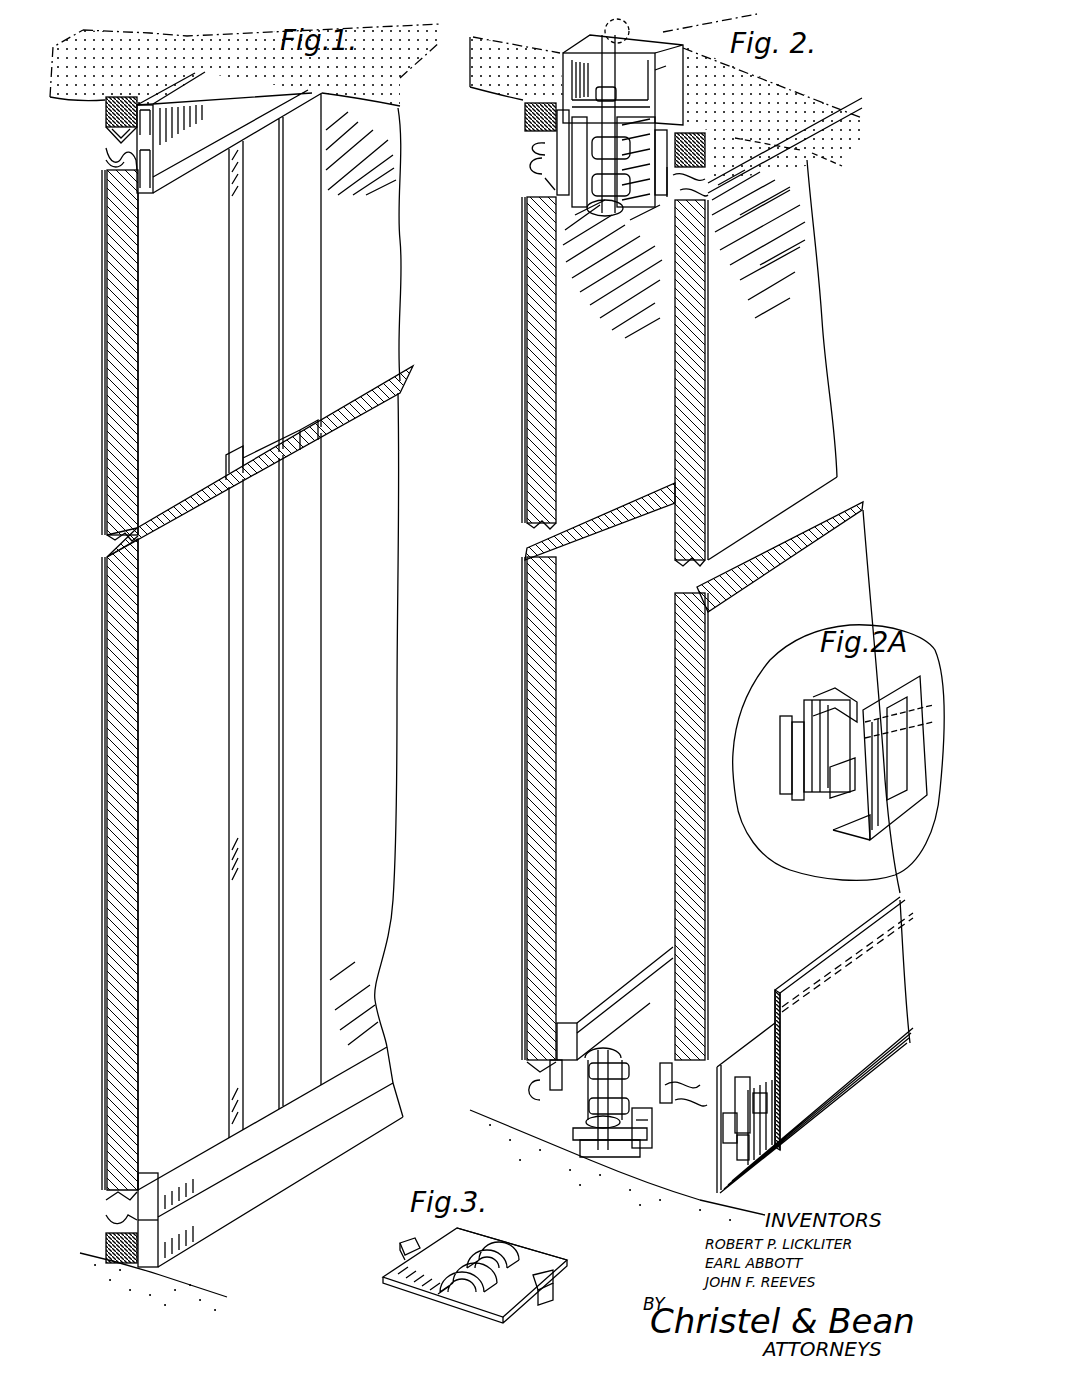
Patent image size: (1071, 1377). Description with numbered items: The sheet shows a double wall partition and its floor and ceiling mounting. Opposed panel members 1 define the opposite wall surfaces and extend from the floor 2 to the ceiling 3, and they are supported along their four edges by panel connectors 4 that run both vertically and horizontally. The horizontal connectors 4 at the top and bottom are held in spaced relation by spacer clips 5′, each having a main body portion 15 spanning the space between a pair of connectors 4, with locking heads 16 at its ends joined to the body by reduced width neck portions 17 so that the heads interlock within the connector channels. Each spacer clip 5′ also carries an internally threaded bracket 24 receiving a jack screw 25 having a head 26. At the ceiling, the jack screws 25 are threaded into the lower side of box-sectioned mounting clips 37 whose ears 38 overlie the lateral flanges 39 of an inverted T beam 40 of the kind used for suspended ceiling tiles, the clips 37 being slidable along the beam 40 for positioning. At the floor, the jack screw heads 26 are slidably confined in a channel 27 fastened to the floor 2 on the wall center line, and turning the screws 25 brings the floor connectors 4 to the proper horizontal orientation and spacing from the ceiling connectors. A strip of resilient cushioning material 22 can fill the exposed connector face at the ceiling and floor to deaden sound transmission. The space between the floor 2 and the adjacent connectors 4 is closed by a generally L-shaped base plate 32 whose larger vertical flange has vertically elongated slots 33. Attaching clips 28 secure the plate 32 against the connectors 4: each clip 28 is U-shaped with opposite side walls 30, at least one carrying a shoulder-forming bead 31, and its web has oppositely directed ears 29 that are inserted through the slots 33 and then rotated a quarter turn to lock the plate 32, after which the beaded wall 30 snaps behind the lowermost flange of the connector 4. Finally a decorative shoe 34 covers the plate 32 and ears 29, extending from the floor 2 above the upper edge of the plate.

In FIG. 1, the panel member 1 is at (104, 366).
In FIG. 2, the panel member 1 is at (777, 387).
In FIG. 1, the floor 2 is at (152, 1270).
In FIG. 2, the floor 2 is at (690, 1190).
In FIG. 1, the ceiling 3 is at (392, 101).
In FIG. 2, the ceiling 3 is at (828, 160).
In FIG. 1, the panel connector 4 is at (217, 148).
In FIG. 2, the panel connector 4 is at (662, 212).
In FIG. 2, the spacer clip 5′ is at (650, 1118).
In FIG. 3, the spacer clip 5′ is at (566, 1259).
In FIG. 3, the main body portion 15 is at (450, 1302).
In FIG. 3, the locking head 16 is at (400, 1244).
In FIG. 3, the neck portion 17 is at (398, 1264).
In FIG. 1, the cushioning material 22 is at (106, 115).
In FIG. 2, the cushioning material 22 is at (525, 112).
In FIG. 2, the internally threaded bracket 24 is at (618, 1060).
In FIG. 3, the internally threaded bracket 24 is at (508, 1268).
In FIG. 2, the jack screw 25 is at (545, 170).
In FIG. 2, the jack screw head 26 is at (590, 1152).
In FIG. 2, the channel 27 is at (575, 1132).
In FIG. 2A, the attaching clip 28 is at (808, 798).
In FIG. 2, the ear 29 is at (775, 1097).
In FIG. 2A, the ear 29 is at (838, 706).
In FIG. 2A, the side wall 30 is at (781, 745).
In FIG. 2A, the shoulder-forming bead 31 is at (793, 797).
In FIG. 2, the base plate 32 is at (727, 1170).
In FIG. 2A, the base plate 32 is at (888, 838).
In FIG. 2A, the slot 33 is at (916, 812).
In FIG. 2, the decorative shoe 34 is at (873, 1053).
In FIG. 2, the mounting clip 37 is at (586, 42).
In FIG. 2, the ear 38 is at (672, 58).
In FIG. 2, the lateral flange 39 is at (730, 62).
In FIG. 2, the inverted T beam 40 is at (615, 116).